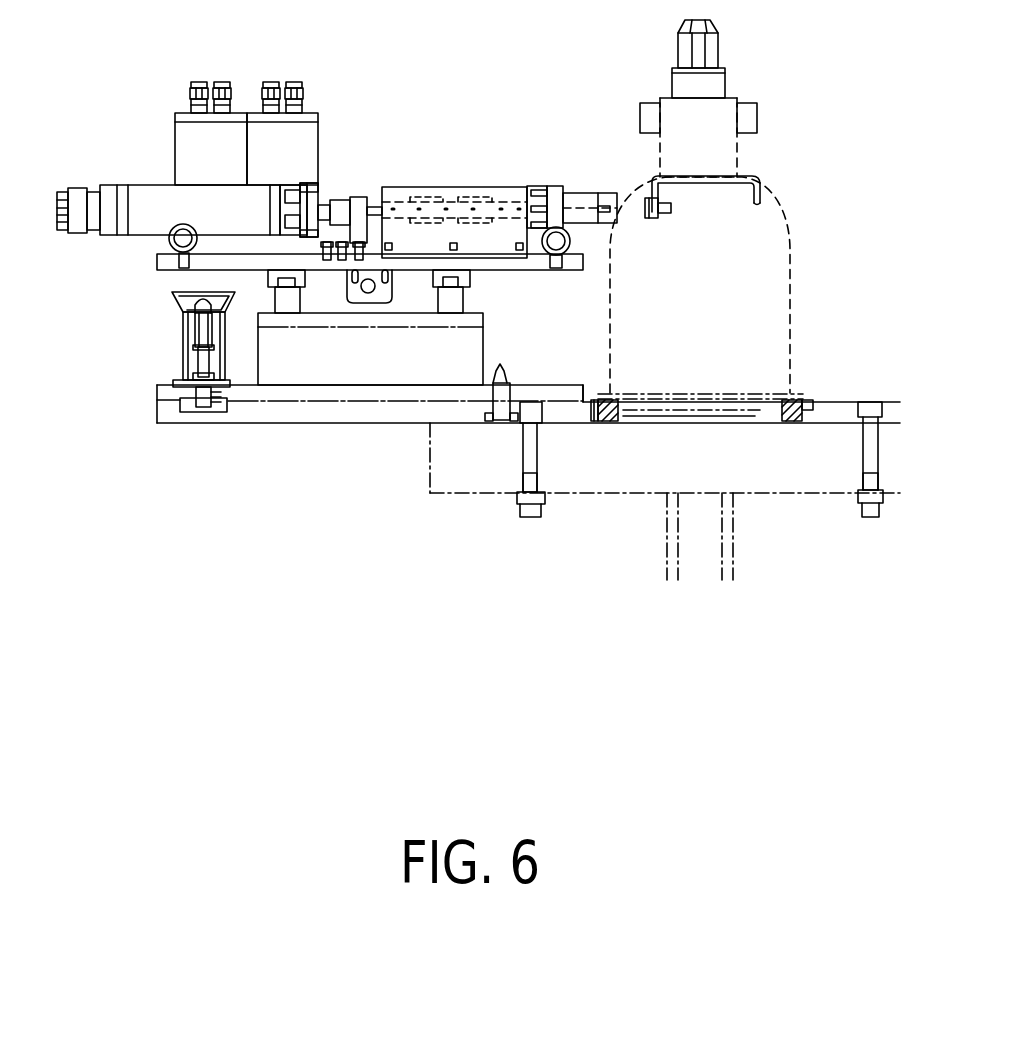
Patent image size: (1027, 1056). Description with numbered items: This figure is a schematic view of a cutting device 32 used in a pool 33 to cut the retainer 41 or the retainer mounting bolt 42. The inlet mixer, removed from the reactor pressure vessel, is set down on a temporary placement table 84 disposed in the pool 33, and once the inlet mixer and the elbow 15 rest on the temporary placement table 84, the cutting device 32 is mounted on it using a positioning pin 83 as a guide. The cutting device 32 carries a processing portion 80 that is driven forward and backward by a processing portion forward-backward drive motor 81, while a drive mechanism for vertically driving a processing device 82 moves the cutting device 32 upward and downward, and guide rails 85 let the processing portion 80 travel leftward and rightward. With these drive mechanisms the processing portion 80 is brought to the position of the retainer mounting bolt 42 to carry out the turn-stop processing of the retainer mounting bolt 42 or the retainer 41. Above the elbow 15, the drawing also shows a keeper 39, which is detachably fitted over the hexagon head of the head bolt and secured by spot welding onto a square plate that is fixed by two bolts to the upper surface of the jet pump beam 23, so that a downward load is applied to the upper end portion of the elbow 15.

The elbow 15 is at (790, 280).
The jet pump beam 23 is at (755, 120).
The cutting device 32 is at (464, 126).
The pool 33 is at (556, 681).
The keeper 39 is at (723, 82).
The retainer 41 is at (760, 185).
The retainer mounting bolt 42 is at (647, 207).
The processing portion 80 is at (562, 188).
The processing portion forward-backward drive motor 81 is at (138, 182).
The processing device 82 is at (195, 330).
The positioning pin 83 is at (500, 407).
The temporary placement table 84 is at (593, 495).
The guide rails 85 is at (287, 310).